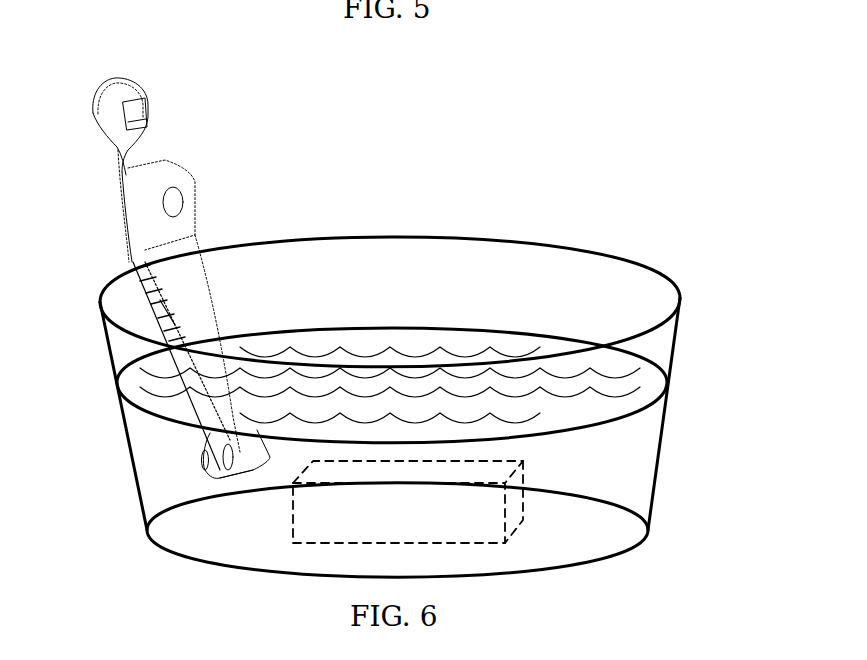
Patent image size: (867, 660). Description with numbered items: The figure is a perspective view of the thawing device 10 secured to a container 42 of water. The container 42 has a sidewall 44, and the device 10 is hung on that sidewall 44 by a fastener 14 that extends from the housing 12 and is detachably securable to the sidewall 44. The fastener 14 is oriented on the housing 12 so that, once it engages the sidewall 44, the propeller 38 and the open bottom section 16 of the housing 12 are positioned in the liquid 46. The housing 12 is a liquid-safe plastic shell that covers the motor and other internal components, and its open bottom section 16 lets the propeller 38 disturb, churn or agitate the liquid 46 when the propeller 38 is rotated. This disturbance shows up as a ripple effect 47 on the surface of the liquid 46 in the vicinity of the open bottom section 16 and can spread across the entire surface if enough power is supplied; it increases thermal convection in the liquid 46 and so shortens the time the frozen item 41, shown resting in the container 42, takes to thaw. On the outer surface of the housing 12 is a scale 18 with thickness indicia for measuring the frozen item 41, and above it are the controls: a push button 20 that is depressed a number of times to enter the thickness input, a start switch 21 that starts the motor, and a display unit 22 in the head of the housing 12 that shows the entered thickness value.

The device 10 is at (189, 315).
The housing 12 is at (197, 240).
The fastener 14 is at (130, 263).
The open bottom section 16 is at (207, 477).
The scale 18 is at (188, 283).
The push button 20 is at (130, 123).
The start switch 21 is at (175, 197).
The display unit 22 is at (136, 105).
The propeller 38 is at (250, 489).
The frozen item 41 is at (473, 520).
The container 42 is at (458, 388).
The sidewall 44 is at (590, 250).
The liquid 46 is at (563, 427).
The ripple effect 47 is at (387, 353).